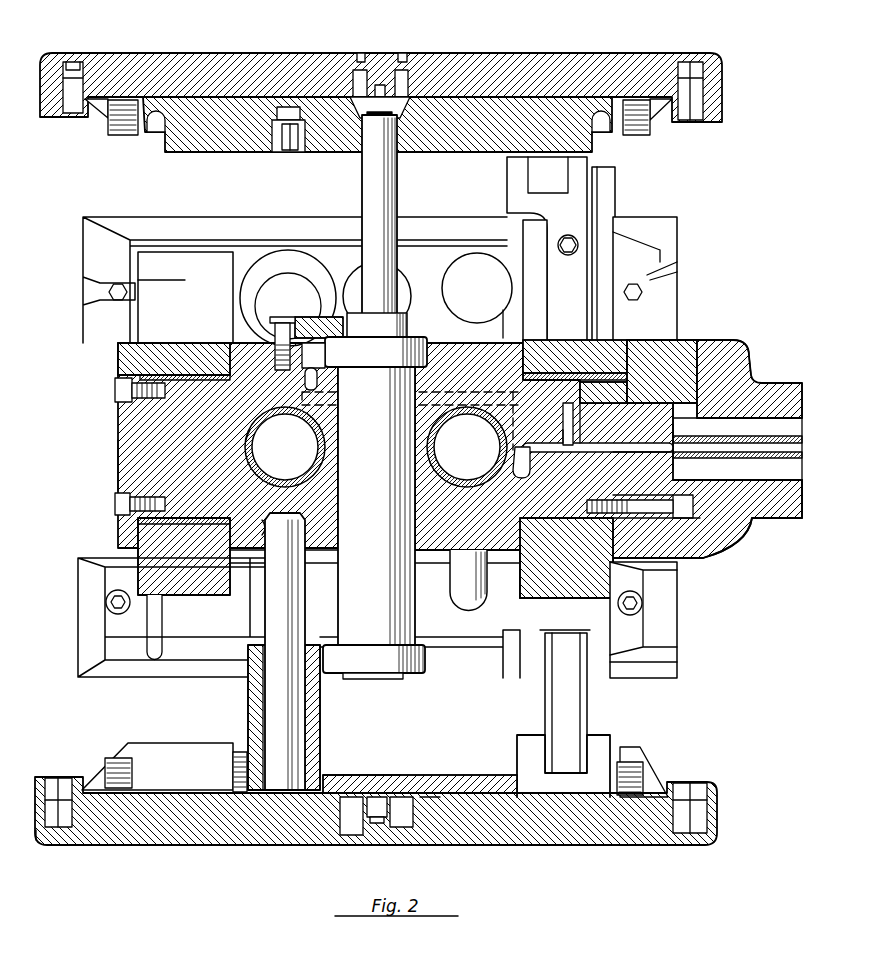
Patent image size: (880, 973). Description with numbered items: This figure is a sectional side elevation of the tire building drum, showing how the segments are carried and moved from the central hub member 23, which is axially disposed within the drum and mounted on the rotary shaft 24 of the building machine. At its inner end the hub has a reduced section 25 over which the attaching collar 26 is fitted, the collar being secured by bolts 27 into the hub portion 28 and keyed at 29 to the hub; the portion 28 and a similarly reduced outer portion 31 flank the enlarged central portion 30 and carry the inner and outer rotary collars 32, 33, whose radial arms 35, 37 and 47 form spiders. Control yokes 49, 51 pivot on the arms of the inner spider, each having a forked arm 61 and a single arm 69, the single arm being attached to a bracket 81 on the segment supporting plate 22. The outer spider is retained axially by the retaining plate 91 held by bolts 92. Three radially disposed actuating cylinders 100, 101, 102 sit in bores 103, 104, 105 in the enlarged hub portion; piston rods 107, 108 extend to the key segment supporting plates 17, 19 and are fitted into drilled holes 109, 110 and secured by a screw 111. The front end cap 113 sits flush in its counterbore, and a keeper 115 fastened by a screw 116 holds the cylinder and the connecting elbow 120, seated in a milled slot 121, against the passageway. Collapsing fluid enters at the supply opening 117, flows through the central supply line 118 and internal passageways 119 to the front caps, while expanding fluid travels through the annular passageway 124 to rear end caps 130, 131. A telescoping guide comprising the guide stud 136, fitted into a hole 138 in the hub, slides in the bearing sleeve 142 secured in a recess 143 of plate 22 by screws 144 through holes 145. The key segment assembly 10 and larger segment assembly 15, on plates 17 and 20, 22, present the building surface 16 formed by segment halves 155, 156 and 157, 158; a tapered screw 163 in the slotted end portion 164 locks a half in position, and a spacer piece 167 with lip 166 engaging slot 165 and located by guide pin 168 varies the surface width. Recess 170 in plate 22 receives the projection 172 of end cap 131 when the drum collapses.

The key segment assembly 10 is at (158, 48).
The larger arcuate segment assembly 15 is at (135, 853).
The building surface 16 is at (238, 845).
The segment supporting plate 17 is at (168, 152).
The segment supporting plate 19 is at (82, 637).
The segment supporting plate 20 is at (85, 250).
The segment supporting plate 22 is at (152, 750).
The central hub member 23 is at (118, 465).
The rotary shaft 24 is at (745, 340).
The reduced diameter section 25 is at (626, 423).
The attaching collar 26 is at (683, 343).
The bolts 27 is at (690, 520).
The hub portion of larger diameter 28 is at (628, 513).
The key 29 is at (628, 390).
The central portion of hub 30 is at (460, 470).
The reduced circular portion 31 is at (158, 408).
The inner rotary collar 32 is at (566, 558).
The outer rotary collar 33 is at (184, 589).
The radial arm 35 is at (615, 262).
The radial arm 37 is at (610, 680).
The radial arm 47 is at (185, 297).
The control yoke 49 is at (505, 197).
The control yoke 51 is at (540, 718).
The forked arm 61 is at (510, 171).
The single arm 69 is at (575, 705).
The bracket 81 is at (608, 740).
The outer retaining plate 91 is at (113, 482).
The bolts 92 is at (111, 510).
The fluid-operated actuating cylinder 100 is at (285, 447).
The fluid-operated actuating cylinder 101 is at (376, 506).
The fluid-operated actuating cylinder 102 is at (482, 400).
The bore 103 is at (245, 455).
The bore 104 is at (430, 490).
The bore 105 is at (512, 479).
The piston rod 107 is at (362, 197).
The piston rod 108 is at (465, 602).
The drilled hole 109 is at (405, 135).
The drilled hole 110 is at (282, 152).
The screw 111 is at (360, 125).
The front end cap 113 is at (472, 344).
The keeper 115 is at (377, 325).
The screw 116 is at (272, 320).
The fluid supply opening 117 is at (643, 473).
The central axial fluid supply line 118 is at (768, 418).
The internal fluid passageway 119 is at (603, 428).
The connecting elbow 120 is at (364, 352).
The milled slot 121 is at (340, 380).
The annular passageway 124 is at (737, 519).
The rear end cap 130 is at (288, 298).
The rear end cap 131 is at (392, 674).
The guide stud 136 is at (268, 610).
The hole 138 is at (262, 520).
The radial bearing sleeve 142 is at (248, 693).
The recess 143 is at (330, 775).
The screws 144 is at (240, 752).
The holes 145 is at (230, 780).
The segment half 155 is at (245, 58).
The segment half 156 is at (548, 55).
The segment half 157 is at (172, 843).
The segment half 158 is at (540, 845).
The tapered screw 163 is at (118, 132).
The slotted end portion 164 is at (100, 113).
The slot 165 is at (410, 845).
The lip 166 is at (432, 830).
The spacer piece 167 is at (370, 838).
The guide pin 168 is at (340, 815).
The recess 170 is at (395, 775).
The projection 172 is at (375, 679).